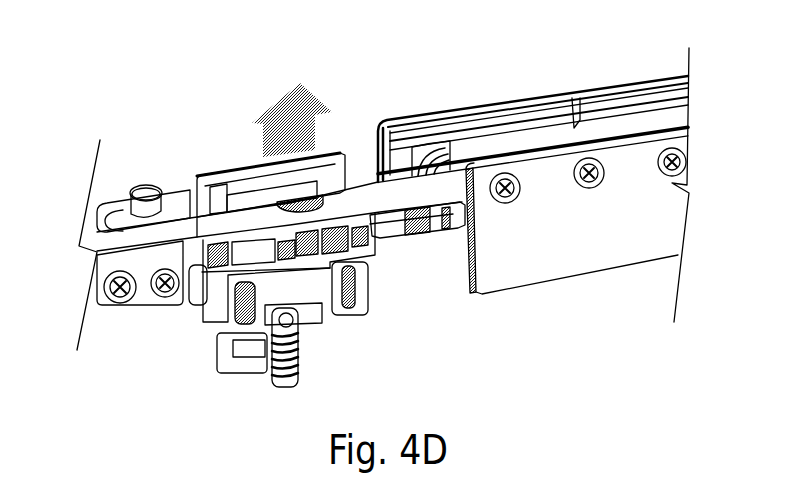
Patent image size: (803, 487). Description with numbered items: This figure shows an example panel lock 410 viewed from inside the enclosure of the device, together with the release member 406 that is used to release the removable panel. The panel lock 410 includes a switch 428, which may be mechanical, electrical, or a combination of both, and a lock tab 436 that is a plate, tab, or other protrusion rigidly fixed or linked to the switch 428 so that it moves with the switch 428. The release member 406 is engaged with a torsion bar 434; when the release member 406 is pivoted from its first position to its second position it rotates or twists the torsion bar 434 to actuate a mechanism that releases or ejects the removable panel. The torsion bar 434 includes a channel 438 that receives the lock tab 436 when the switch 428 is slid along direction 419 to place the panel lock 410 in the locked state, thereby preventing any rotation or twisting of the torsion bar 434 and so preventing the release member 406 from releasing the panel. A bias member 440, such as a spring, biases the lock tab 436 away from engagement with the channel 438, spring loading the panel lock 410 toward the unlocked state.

The release member 406 is at (521, 93).
The panel lock 410 is at (176, 326).
The direction 419 is at (300, 117).
The switch 428 is at (243, 188).
The torsion bar 434 is at (392, 196).
The lock tab 436 is at (311, 285).
The channel 438 is at (320, 198).
The bias member 440 is at (267, 366).